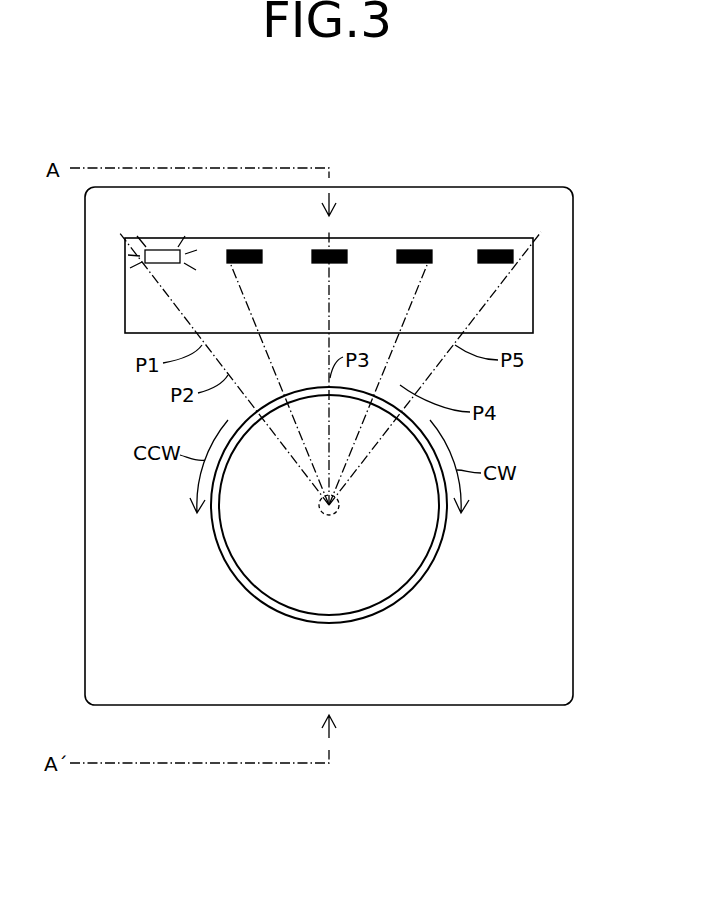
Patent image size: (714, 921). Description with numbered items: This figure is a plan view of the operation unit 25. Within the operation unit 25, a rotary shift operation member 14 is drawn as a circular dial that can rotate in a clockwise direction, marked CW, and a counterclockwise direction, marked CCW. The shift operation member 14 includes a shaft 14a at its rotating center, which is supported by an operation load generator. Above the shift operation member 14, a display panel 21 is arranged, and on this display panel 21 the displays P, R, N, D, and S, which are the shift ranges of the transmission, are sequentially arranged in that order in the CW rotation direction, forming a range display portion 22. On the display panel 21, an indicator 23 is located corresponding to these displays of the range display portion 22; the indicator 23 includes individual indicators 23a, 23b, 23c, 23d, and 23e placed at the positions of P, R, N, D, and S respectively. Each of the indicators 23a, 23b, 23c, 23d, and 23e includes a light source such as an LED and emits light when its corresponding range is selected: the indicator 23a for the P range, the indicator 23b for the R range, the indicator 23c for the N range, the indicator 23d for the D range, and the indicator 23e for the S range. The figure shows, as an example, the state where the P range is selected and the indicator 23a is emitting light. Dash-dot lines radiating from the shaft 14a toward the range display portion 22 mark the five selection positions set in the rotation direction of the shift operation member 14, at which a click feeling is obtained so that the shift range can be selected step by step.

The shift operation member 14 is at (443, 545).
The shaft 14a is at (340, 512).
The display panel 21 is at (535, 303).
The range display portion 22 is at (534, 282).
The indicator 23 is at (557, 125).
The indicator 23a is at (162, 250).
The indicator 23b is at (243, 249).
The indicator 23c is at (335, 249).
The indicator 23d is at (412, 249).
The indicator 23e is at (493, 249).
The operation unit 25 is at (571, 194).